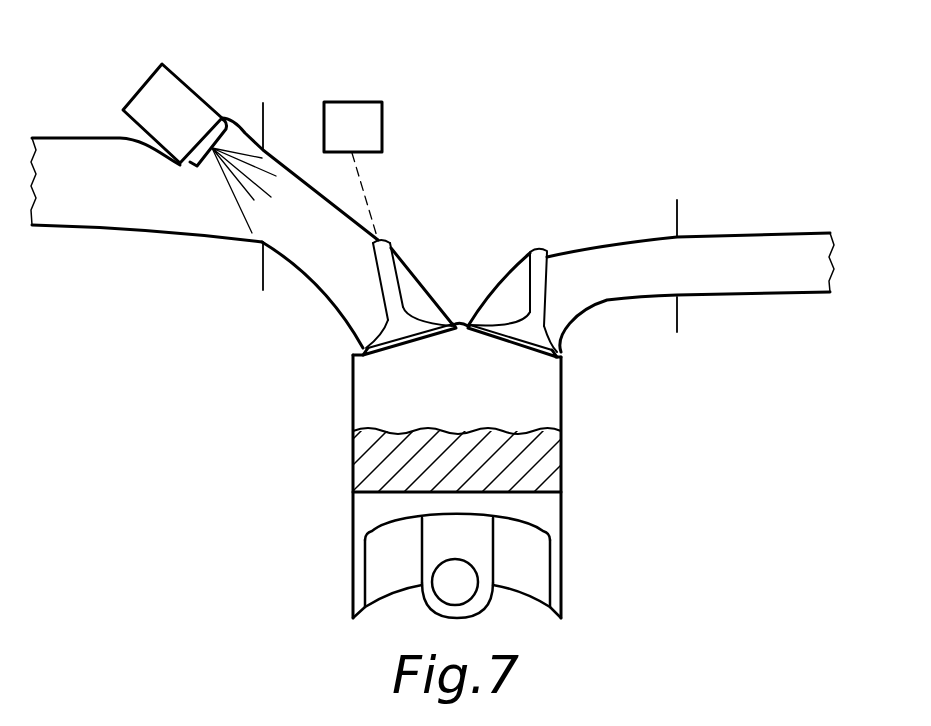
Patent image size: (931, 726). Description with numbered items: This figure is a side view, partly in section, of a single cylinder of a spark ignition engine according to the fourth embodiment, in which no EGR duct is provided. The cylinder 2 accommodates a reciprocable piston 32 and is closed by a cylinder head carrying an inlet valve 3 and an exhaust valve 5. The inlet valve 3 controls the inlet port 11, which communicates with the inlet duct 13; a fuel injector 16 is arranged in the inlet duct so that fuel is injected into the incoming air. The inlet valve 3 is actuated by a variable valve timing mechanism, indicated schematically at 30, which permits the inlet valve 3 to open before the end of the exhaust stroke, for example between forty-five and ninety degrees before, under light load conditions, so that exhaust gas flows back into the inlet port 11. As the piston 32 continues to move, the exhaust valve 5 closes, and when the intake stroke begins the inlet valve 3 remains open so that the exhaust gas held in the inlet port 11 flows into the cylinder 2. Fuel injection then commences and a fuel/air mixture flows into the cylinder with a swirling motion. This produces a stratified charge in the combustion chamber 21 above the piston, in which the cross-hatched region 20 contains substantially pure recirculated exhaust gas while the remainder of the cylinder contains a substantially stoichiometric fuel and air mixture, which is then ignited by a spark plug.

The cylinder 2 is at (353, 383).
The inlet valve 3 is at (398, 290).
The exhaust valve 5 is at (532, 258).
The inlet port 11 is at (337, 280).
The inlet duct 13 is at (162, 205).
The fuel injector 16 is at (185, 97).
The region 20 is at (527, 468).
The combustion chamber 21 is at (527, 393).
The VVT mechanism 30 is at (346, 115).
The piston 32 is at (552, 522).